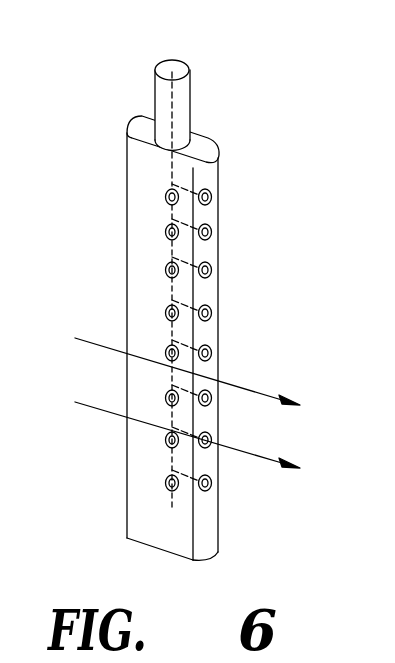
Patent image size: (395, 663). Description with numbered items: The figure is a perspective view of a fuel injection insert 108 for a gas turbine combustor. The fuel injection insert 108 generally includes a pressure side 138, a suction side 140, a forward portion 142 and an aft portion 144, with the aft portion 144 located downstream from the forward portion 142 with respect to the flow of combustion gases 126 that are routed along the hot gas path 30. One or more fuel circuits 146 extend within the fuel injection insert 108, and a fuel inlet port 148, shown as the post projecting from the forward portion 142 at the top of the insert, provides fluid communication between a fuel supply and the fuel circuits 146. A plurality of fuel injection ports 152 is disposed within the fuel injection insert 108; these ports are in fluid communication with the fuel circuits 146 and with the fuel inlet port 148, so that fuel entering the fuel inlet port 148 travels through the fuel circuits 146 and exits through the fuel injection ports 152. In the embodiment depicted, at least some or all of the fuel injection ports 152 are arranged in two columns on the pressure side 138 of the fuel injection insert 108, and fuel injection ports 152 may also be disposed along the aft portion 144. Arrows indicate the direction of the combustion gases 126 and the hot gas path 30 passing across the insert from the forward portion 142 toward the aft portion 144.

The fuel injection insert 108 is at (220, 288).
The fuel inlet port 148 is at (167, 63).
The forward portion 142 is at (134, 114).
The suction side 140 is at (207, 142).
The pressure side 138 is at (143, 183).
The aft portion 144 is at (207, 527).
The fuel injection ports 152 is at (165, 233).
The fuel circuits 146 is at (168, 298).
The combustion gases 126 is at (97, 350).
The hot gas path 30 is at (97, 412).